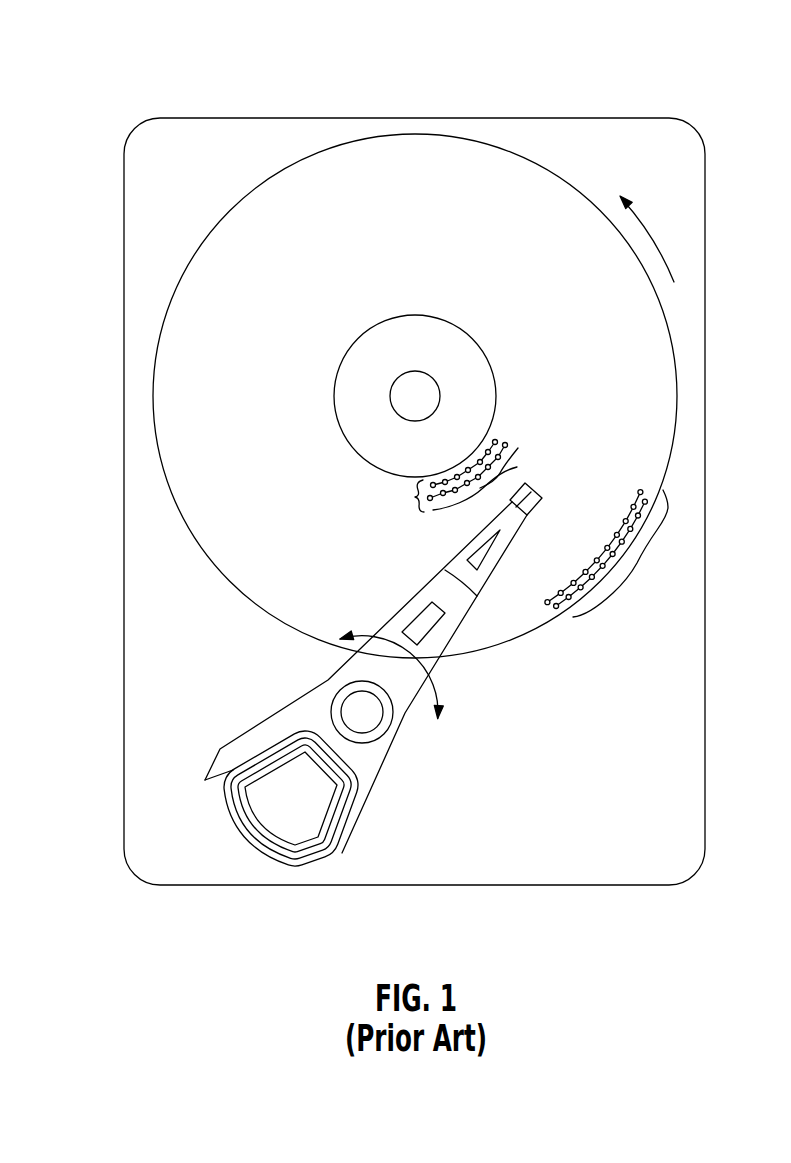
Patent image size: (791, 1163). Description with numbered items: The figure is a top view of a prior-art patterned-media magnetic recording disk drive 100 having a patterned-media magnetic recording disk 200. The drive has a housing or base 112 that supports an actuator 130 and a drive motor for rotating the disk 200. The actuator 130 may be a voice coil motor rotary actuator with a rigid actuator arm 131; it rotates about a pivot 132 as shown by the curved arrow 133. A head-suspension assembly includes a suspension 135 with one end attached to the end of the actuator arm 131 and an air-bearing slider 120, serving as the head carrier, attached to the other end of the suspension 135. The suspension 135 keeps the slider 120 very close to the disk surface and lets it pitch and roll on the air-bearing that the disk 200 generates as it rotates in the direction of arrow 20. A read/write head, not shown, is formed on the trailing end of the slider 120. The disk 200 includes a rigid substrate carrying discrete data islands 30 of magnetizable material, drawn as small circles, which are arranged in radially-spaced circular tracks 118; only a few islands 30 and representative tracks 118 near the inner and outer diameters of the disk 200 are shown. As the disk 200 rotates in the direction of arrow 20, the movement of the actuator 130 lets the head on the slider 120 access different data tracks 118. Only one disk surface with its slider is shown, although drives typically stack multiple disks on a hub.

The patterned-media magnetic recording disk drive 100 is at (116, 28).
The housing or base 112 is at (633, 118).
The patterned-media magnetic recording disk 200 is at (277, 172).
The arrow indicating disk rotation direction 20 is at (641, 222).
The actuator 130 is at (364, 668).
The pivot 132 is at (352, 705).
The actuator arm 131 is at (403, 618).
The suspension 135 is at (458, 567).
The arrow indicating actuator rotation 133 is at (440, 690).
The air-bearing slider 120 is at (542, 500).
The data islands 30 is at (548, 529).
The circular tracks 118 is at (418, 494).